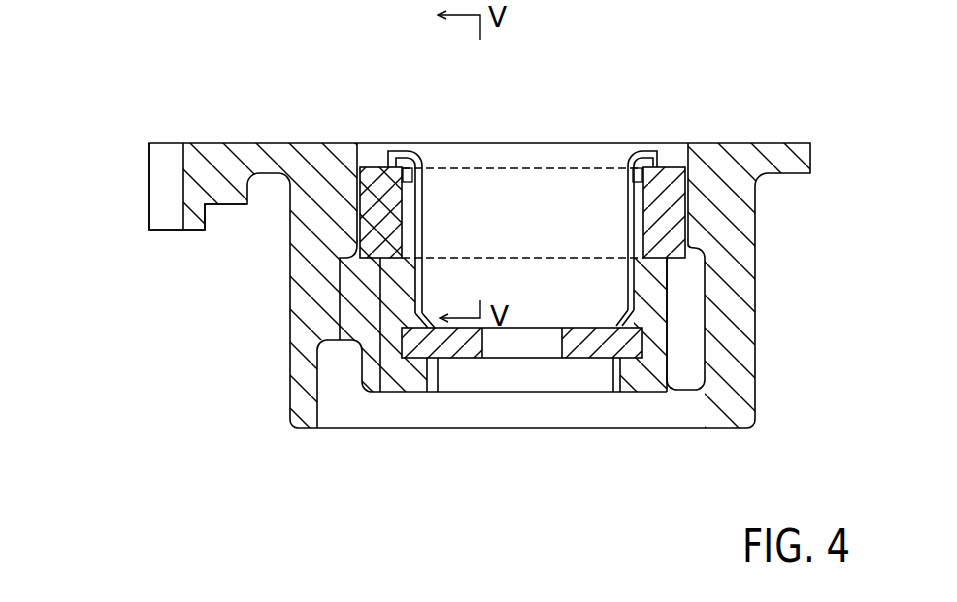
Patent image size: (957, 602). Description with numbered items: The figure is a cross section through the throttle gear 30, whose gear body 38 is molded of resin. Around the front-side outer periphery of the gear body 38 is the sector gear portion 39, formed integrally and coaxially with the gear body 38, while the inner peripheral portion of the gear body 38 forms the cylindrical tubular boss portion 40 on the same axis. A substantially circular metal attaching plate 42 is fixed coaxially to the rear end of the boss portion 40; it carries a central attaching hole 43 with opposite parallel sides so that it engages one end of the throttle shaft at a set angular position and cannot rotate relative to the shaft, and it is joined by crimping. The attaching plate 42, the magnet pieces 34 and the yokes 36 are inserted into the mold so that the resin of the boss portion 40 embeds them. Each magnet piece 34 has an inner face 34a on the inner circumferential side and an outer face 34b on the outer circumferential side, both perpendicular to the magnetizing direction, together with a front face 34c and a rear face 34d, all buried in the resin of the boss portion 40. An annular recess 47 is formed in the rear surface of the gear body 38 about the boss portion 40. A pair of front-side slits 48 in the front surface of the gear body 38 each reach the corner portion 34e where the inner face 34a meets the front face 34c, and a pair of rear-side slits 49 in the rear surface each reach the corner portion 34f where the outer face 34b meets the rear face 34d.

The throttle gear 30 is at (211, 117).
The magnet piece 34 is at (405, 152).
The inner face 34a is at (425, 218).
The outer face 34b is at (357, 215).
The front face 34c is at (388, 156).
The rear face 34d is at (385, 279).
The corner portion 34e is at (428, 152).
The corner portion 34f is at (380, 262).
The yoke 36 is at (557, 195).
The gear body 38 is at (304, 142).
The sector gear portion 39 is at (155, 180).
The boss portion 40 is at (370, 367).
The attaching plate 42 is at (600, 365).
The attaching hole 43 is at (590, 350).
The annular recess 47 is at (330, 342).
The front-side slit 48 is at (396, 160).
The rear-side slit 49 is at (362, 355).